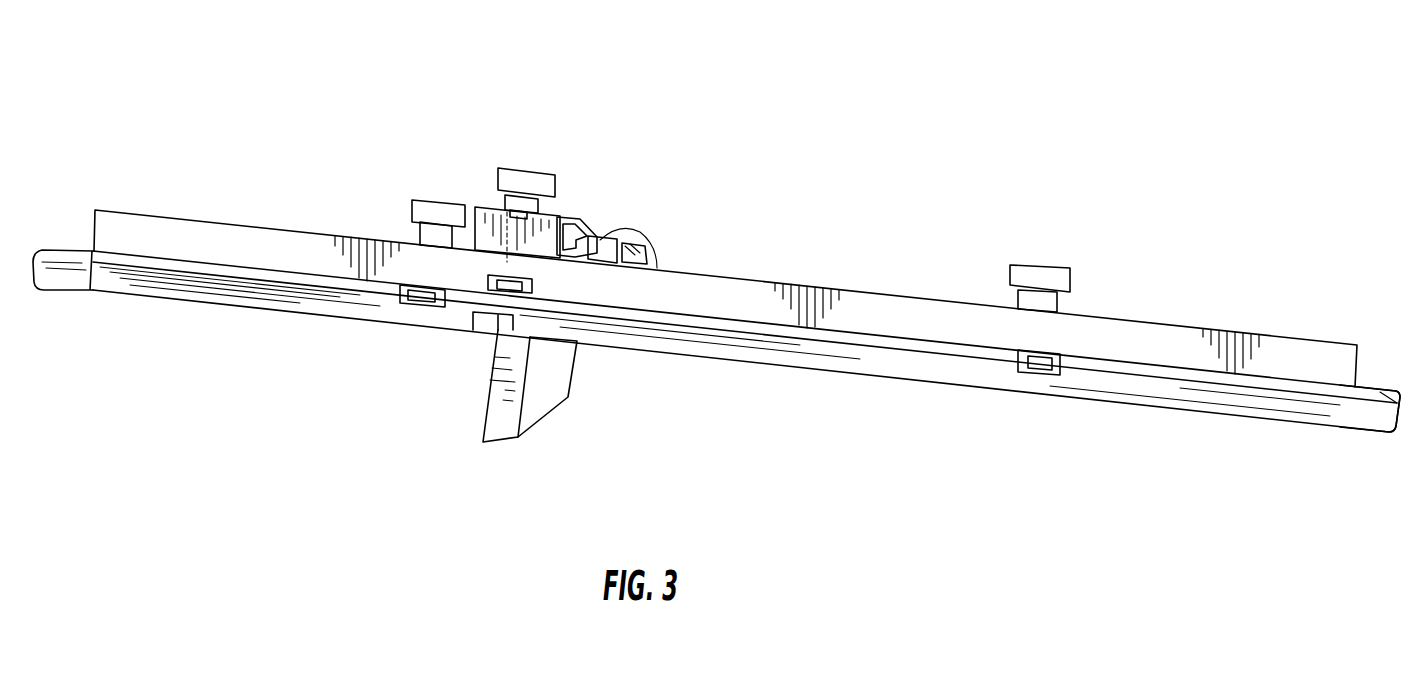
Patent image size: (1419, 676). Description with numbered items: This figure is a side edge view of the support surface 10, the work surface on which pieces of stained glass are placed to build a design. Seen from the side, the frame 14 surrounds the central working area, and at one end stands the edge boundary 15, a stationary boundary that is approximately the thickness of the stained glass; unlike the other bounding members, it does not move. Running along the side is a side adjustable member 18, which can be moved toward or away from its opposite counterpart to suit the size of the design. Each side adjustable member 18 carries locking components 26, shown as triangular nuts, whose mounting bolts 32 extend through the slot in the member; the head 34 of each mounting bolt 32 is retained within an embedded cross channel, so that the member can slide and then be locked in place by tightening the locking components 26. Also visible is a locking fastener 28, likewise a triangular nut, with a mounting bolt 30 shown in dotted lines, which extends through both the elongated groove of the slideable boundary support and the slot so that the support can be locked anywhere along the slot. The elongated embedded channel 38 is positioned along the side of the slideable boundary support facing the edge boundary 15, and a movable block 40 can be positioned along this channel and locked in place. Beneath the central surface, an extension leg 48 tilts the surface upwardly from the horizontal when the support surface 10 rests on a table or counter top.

The support surface 10 is at (718, 255).
The frame 14 is at (88, 250).
The edge boundary 15 is at (1358, 382).
The side adjustable member 18 is at (858, 290).
The locking component 26 is at (437, 208).
The locking fastener 28 is at (531, 178).
The mounting bolt 30 is at (507, 263).
The mounting bolt 32 is at (425, 234).
The head 34 is at (416, 304).
The elongated embedded channel 38 is at (560, 218).
The movable block 40 is at (622, 252).
The extension leg 48 is at (560, 383).